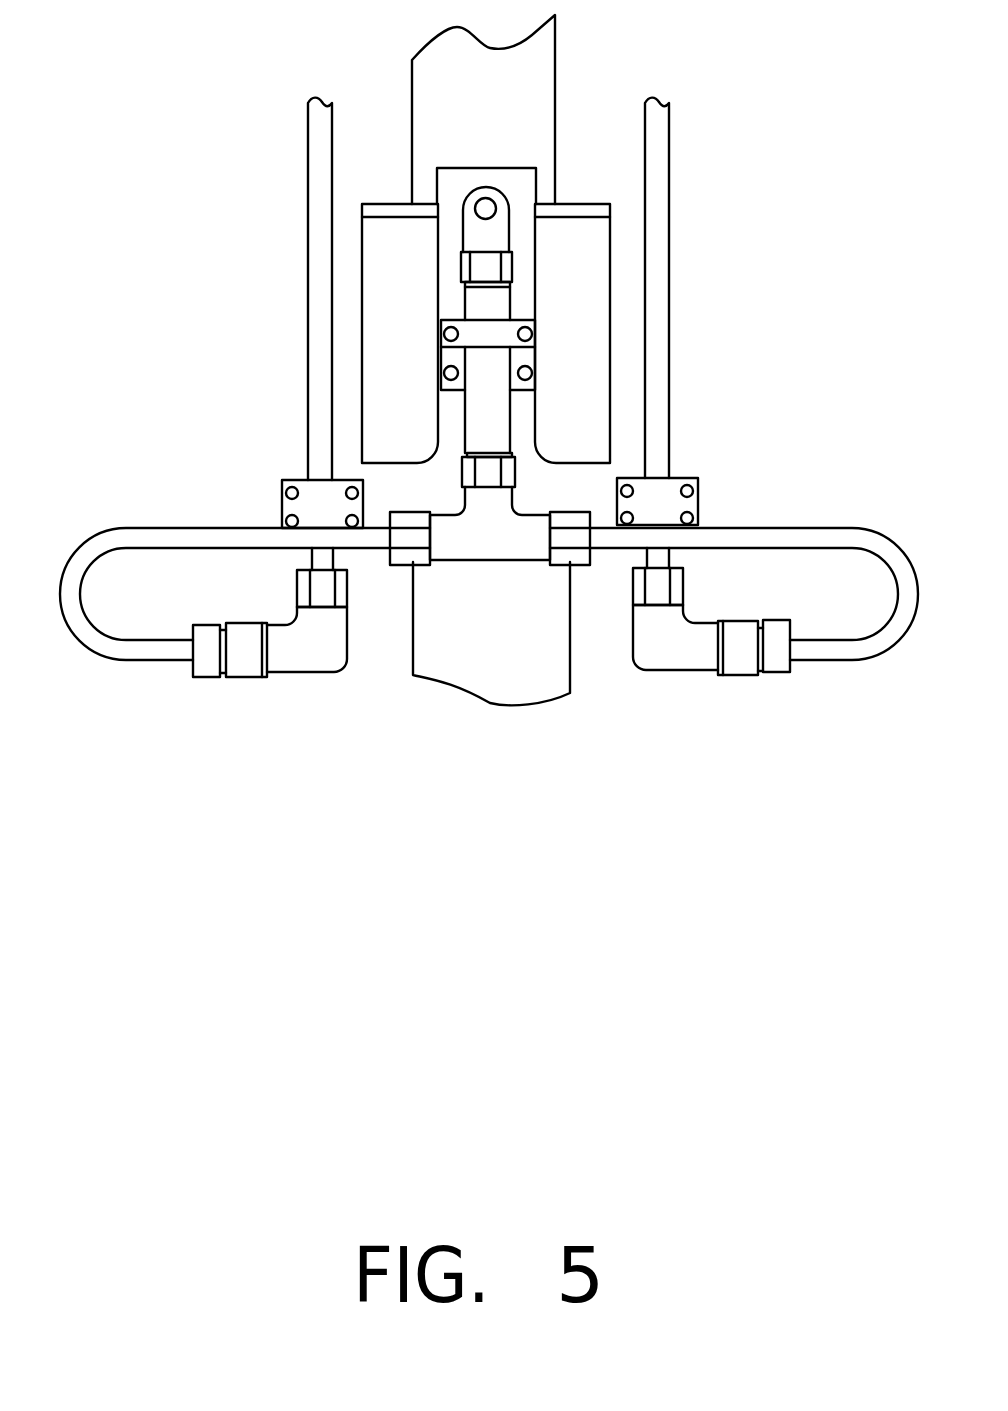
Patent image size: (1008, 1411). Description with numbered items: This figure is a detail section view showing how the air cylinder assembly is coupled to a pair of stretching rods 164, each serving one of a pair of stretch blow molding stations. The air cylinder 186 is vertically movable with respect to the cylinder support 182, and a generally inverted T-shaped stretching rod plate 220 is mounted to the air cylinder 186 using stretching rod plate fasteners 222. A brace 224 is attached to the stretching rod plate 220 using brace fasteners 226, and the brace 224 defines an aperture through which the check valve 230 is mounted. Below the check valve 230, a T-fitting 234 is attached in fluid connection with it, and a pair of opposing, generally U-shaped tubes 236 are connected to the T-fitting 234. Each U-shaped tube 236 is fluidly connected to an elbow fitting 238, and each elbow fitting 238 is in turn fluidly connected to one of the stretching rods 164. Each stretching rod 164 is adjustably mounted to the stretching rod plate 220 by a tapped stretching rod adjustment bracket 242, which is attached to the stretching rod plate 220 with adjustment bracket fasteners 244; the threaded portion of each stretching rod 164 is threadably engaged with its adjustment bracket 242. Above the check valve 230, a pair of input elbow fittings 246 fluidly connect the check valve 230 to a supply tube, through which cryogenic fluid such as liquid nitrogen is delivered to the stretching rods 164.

The stretching rod 164 is at (320, 192).
The cylinder support 182 is at (517, 690).
The air cylinder 186 is at (387, 233).
The stretching rod plate 220 is at (508, 177).
The stretching rod plate fasteners 222 is at (447, 373).
The brace 224 is at (443, 318).
The brace fasteners 226 is at (447, 334).
The check valve 230 is at (497, 412).
The T-fitting 234 is at (487, 540).
The U-shaped tube 236 is at (137, 538).
The elbow fitting 238 is at (320, 648).
The stretching rod adjustment bracket 242 is at (307, 498).
The adjustment bracket fasteners 244 is at (282, 521).
The input elbow fittings 246 is at (480, 193).